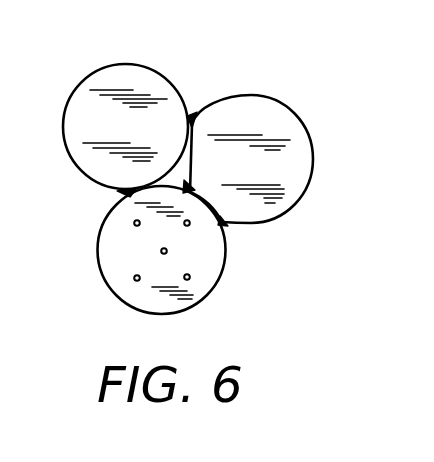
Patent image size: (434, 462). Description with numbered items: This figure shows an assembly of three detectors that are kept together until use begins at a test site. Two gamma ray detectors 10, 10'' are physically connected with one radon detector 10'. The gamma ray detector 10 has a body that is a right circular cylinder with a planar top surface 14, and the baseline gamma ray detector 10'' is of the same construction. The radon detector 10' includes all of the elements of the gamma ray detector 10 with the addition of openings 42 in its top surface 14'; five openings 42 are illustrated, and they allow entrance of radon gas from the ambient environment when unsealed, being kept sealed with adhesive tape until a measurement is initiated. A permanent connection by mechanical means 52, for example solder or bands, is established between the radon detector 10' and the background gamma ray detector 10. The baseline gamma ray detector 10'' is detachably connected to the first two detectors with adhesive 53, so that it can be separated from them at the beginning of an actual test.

The baseline gamma ray detector 10'' is at (111, 111).
The gamma ray detector 10 is at (251, 133).
The radon detector 10' is at (196, 258).
The planar top surface 14 is at (186, 146).
The top surface 14' is at (152, 251).
The openings 42 is at (135, 282).
The adhesive 53 is at (192, 117).
The mechanical means 52 is at (225, 224).